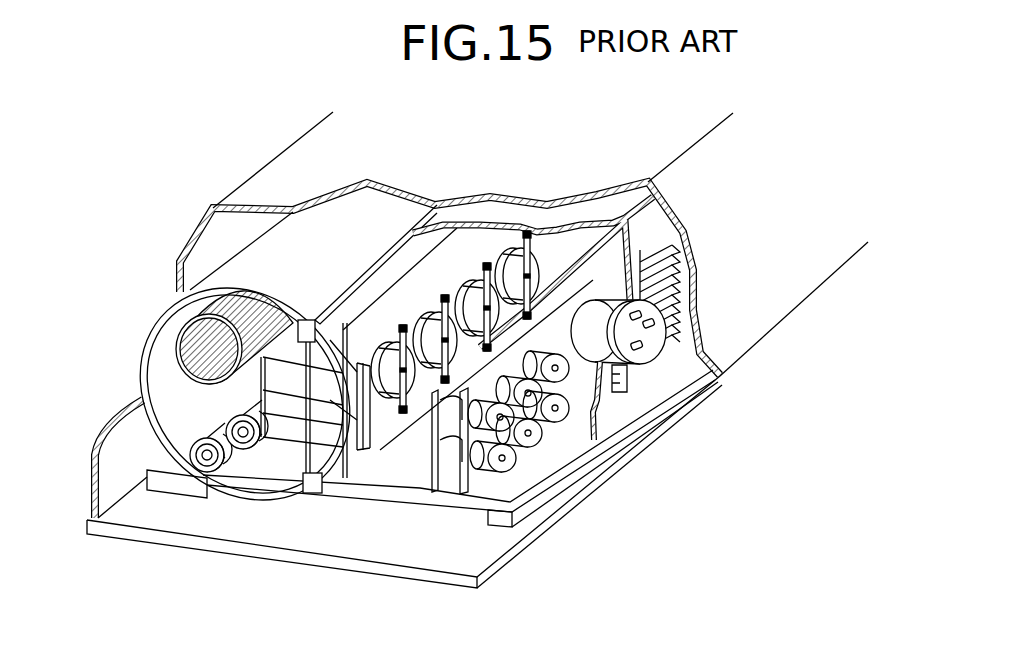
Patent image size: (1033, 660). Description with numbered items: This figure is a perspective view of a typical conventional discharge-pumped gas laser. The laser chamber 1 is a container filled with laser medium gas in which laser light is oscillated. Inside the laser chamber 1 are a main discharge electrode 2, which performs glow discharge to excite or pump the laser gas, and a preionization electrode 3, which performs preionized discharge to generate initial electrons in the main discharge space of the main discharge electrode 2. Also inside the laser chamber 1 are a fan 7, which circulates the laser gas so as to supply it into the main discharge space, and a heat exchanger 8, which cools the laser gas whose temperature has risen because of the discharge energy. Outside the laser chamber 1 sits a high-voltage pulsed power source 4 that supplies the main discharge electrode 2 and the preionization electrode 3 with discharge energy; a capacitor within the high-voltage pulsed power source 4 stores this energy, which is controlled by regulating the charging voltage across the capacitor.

The laser chamber 1 is at (380, 213).
The main discharge electrode 2 is at (300, 320).
The preionization electrode 3 is at (333, 322).
The high-voltage pulsed power source 4 is at (460, 242).
The fan 7 is at (180, 292).
The heat exchanger 8 is at (207, 465).